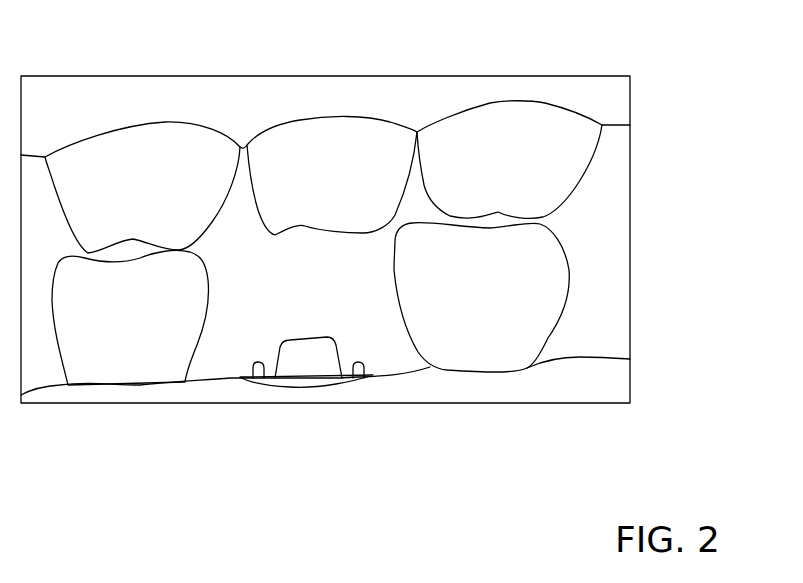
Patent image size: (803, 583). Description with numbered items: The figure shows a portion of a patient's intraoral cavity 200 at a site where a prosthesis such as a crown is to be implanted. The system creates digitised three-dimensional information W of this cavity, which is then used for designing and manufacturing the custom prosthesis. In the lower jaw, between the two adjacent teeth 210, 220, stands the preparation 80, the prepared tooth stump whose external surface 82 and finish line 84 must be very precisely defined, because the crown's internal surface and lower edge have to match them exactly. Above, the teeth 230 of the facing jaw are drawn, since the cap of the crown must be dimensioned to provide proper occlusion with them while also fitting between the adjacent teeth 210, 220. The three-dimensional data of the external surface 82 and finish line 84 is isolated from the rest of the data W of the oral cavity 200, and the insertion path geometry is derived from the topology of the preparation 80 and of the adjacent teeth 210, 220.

The intraoral cavity 200 is at (630, 242).
The adjacent tooth 210 is at (149, 328).
The adjacent tooth 220 is at (512, 310).
The teeth of the facing jaw 230 is at (340, 193).
The preparation 80 is at (315, 373).
The external surface of the preparation 82 is at (333, 338).
The finish line 84 is at (258, 373).
The three-dimensional information W is at (670, 65).